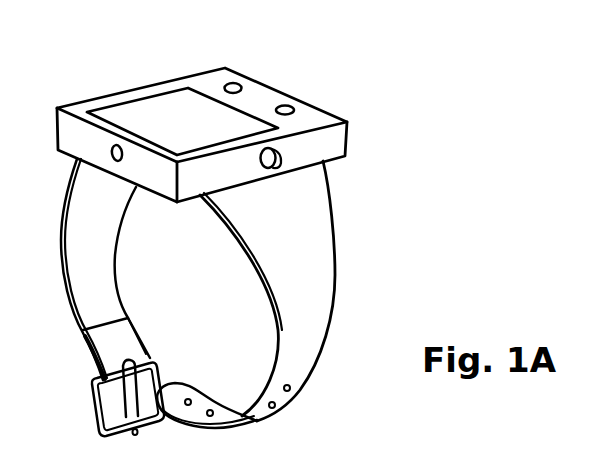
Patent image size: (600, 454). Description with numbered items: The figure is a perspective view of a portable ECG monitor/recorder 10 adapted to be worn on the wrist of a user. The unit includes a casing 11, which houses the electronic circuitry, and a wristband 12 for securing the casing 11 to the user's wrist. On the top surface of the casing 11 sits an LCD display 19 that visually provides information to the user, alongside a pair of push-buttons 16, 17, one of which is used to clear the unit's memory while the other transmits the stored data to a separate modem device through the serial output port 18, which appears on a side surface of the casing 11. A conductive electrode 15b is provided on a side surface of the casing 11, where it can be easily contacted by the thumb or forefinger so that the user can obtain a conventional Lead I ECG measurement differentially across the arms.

The portable ECG monitor/recorder 10 is at (335, 72).
The casing 11 is at (350, 131).
The wristband 12 is at (335, 263).
The conductive electrode 15b is at (284, 162).
The push-button 16 is at (240, 84).
The push-button 17 is at (291, 109).
The serial output port 18 is at (113, 158).
The LCD display 19 is at (140, 107).